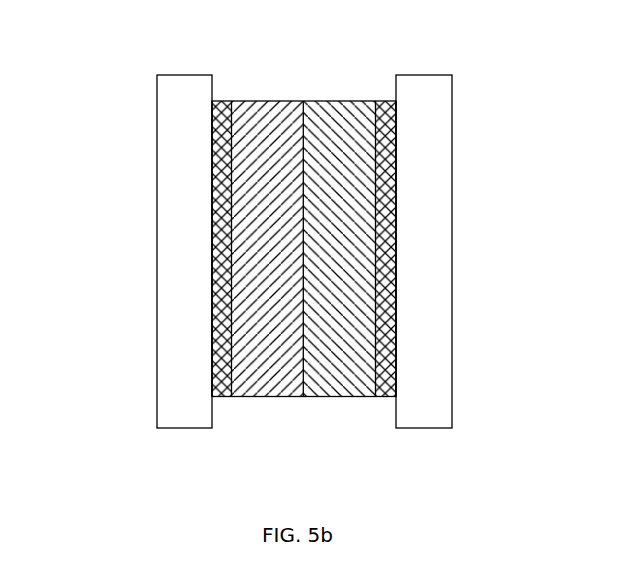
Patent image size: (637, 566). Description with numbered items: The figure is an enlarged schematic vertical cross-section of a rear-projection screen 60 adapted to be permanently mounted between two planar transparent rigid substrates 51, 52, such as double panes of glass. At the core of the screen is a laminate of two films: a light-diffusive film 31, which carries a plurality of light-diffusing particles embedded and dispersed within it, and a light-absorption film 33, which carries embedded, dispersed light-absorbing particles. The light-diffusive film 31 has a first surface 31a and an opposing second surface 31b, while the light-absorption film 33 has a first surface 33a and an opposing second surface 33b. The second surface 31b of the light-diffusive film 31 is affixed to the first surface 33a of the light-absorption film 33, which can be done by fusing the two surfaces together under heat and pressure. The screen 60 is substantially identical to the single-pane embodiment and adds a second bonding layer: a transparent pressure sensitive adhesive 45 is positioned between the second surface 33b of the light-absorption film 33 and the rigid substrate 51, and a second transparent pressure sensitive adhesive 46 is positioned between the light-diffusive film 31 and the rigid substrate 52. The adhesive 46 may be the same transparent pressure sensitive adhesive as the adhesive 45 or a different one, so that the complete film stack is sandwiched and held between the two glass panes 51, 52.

The rear-projection screen 60 is at (302, 92).
The light-diffusive film 31 is at (231, 205).
The first surface of light-diffusive film 31a is at (212, 166).
The second surface of light-diffusive film 31b is at (212, 240).
The light-absorption film 33 is at (376, 203).
The first surface of light-absorption film 33a is at (396, 166).
The second surface of light-absorption film 33b is at (396, 232).
The second transparent pressure sensitive adhesive 46 is at (216, 297).
The transparent pressure sensitive adhesive 45 is at (392, 298).
The planar transparent rigid substrate 52 is at (172, 353).
The planar transparent rigid substrate 51 is at (433, 352).